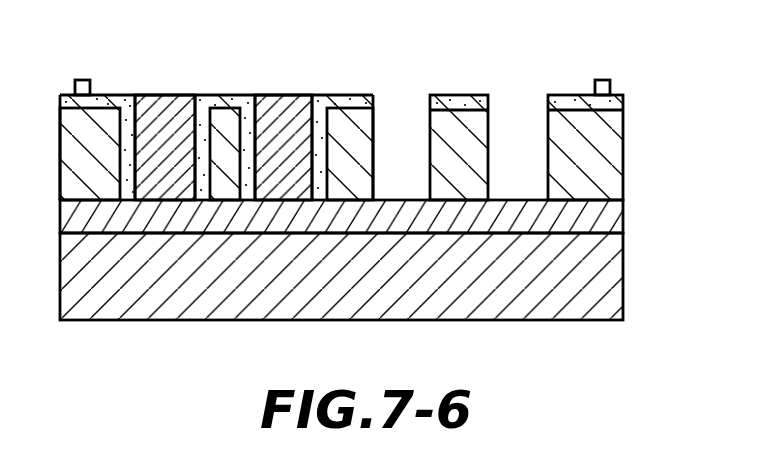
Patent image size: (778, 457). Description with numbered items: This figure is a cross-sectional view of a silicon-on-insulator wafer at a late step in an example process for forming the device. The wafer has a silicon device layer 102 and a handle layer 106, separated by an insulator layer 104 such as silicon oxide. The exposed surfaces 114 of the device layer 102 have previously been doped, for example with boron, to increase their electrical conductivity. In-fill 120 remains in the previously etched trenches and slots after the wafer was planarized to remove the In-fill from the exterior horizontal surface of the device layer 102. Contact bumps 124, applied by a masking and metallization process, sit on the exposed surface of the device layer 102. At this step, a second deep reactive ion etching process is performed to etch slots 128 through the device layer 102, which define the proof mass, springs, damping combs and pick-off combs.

The silicon device layer 102 is at (625, 140).
The insulator layer 104 is at (625, 212).
The handle layer 106 is at (625, 276).
The exposed surfaces 114 is at (452, 95).
The In-fill 120 is at (163, 94).
The contact bumps 124 is at (83, 80).
The slots 128 is at (403, 112).